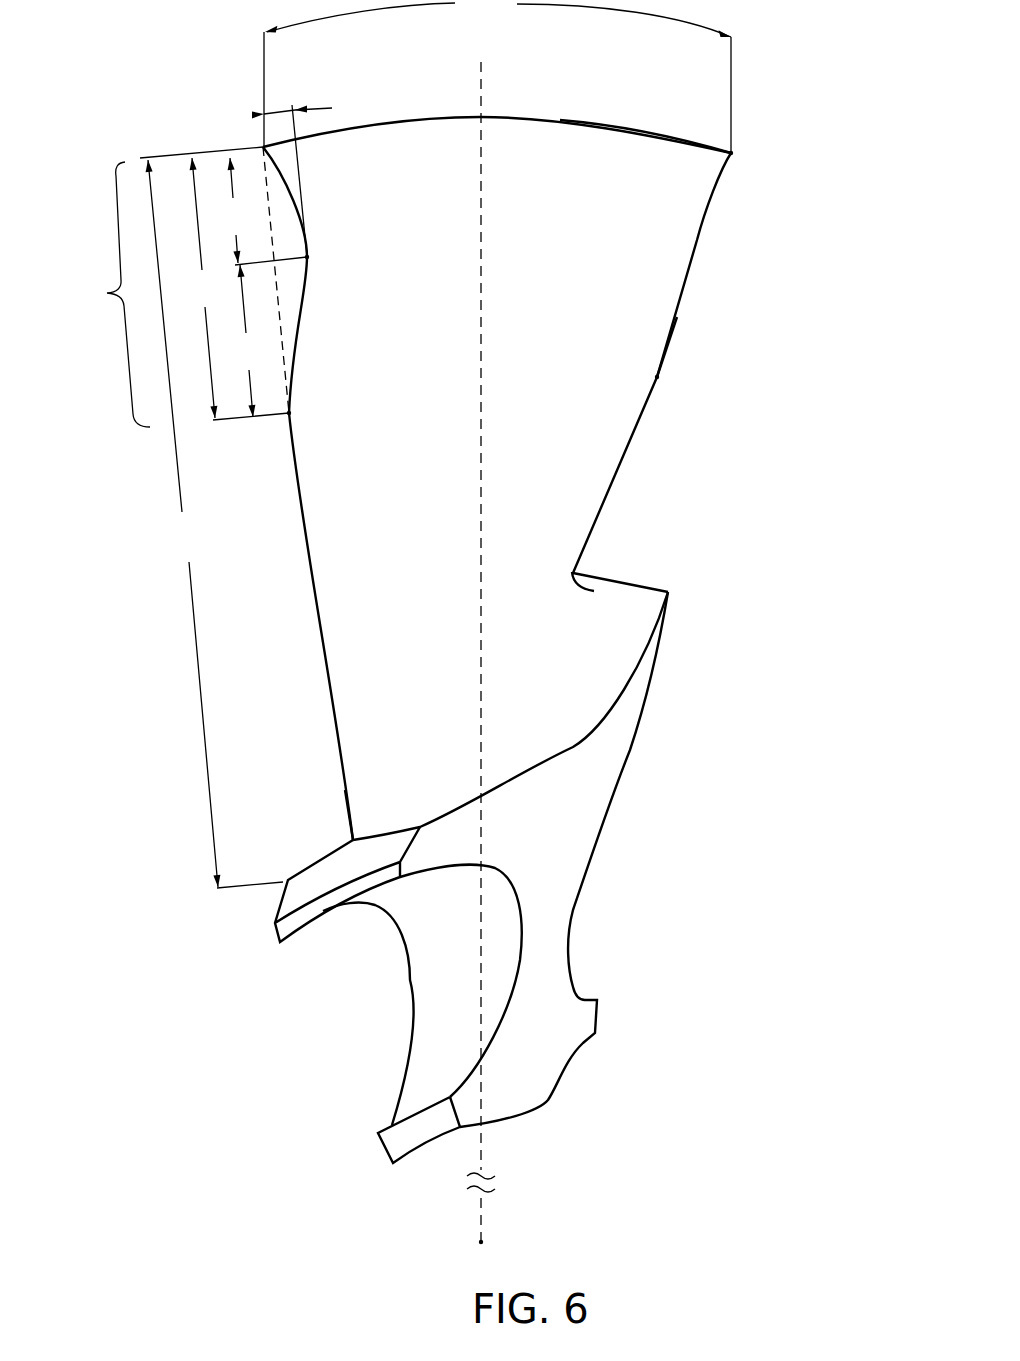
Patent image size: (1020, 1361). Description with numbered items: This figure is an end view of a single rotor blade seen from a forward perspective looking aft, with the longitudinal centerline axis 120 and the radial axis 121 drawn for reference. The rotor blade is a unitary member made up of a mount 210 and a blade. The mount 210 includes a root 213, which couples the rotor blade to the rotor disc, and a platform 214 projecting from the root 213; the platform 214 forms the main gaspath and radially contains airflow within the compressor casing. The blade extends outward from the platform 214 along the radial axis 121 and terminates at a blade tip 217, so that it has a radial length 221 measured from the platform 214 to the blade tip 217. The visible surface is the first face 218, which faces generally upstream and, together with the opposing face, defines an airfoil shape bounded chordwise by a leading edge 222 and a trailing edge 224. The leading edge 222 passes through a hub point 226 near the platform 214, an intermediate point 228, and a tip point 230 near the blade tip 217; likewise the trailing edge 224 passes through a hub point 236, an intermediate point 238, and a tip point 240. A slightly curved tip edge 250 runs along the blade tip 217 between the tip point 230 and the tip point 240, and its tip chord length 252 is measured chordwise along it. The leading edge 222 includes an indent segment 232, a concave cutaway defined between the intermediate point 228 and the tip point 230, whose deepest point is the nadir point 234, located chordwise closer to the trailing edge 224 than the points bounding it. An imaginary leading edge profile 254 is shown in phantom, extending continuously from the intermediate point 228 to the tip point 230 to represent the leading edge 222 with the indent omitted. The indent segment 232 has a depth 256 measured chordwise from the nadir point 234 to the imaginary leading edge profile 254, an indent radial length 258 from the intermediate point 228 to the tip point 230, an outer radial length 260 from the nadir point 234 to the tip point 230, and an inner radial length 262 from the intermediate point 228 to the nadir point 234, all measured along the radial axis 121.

The longitudinal centerline axis 120 is at (481, 1242).
The radial axis 121 is at (482, 80).
The mount 210 is at (558, 917).
The root 213 is at (430, 1030).
The platform 214 is at (283, 903).
The blade tip 217 is at (596, 120).
The first face 218 is at (412, 392).
The radial length 221 is at (214, 524).
The leading edge 222 is at (318, 602).
The trailing edge 224 is at (697, 275).
The hub point 226 is at (349, 836).
The intermediate point 228 is at (289, 413).
The tip point 230 is at (263, 147).
The indent segment 232 is at (102, 294).
The nadir point 234 is at (307, 257).
The hub point 236 is at (576, 573).
The intermediate point 238 is at (657, 377).
The tip point 240 is at (733, 153).
The tip edge 250 is at (403, 120).
The tip chord length 252 is at (497, 76).
The imaginary leading edge profile 254 is at (280, 303).
The depth 256 is at (280, 112).
The indent radial length 258 is at (204, 288).
The outer radial length 260 is at (231, 210).
The inner radial length 262 is at (249, 341).